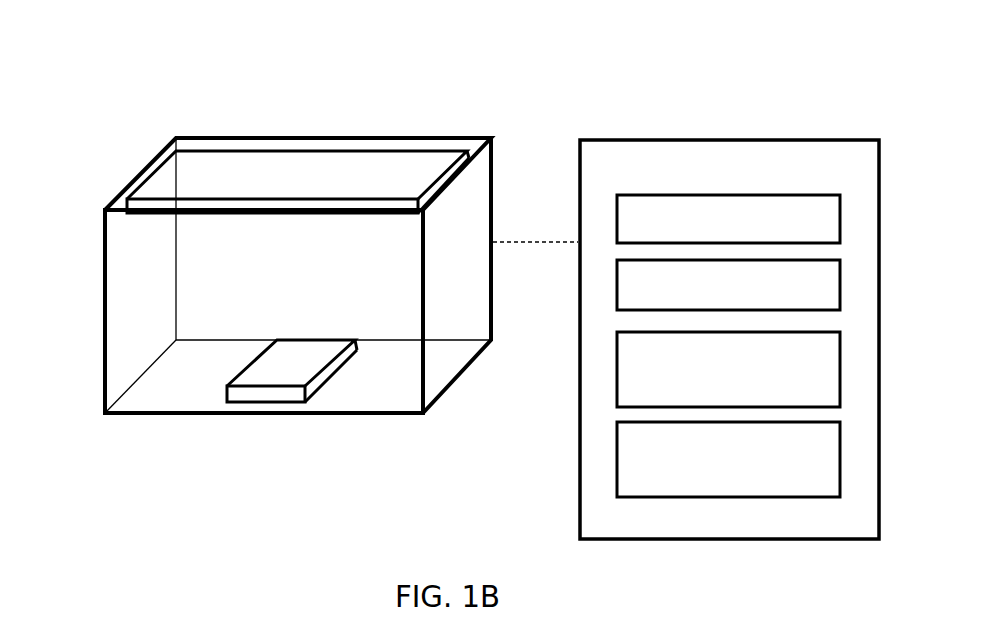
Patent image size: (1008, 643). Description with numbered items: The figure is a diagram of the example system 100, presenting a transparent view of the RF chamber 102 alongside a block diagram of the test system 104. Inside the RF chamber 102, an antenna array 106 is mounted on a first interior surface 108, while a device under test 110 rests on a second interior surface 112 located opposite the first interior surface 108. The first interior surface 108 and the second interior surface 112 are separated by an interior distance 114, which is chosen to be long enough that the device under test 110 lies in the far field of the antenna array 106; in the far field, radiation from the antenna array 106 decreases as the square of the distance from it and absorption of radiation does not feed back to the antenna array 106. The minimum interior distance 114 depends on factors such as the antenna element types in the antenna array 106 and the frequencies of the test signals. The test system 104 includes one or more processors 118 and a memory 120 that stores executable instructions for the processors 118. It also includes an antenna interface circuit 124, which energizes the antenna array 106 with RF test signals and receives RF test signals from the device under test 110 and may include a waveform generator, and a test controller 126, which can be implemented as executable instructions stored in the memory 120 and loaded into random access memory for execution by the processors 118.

The system 100 is at (480, 58).
The RF chamber 102 is at (203, 97).
The test system 104 is at (735, 138).
The antenna array 106 is at (298, 182).
The first interior surface 108 is at (313, 138).
The device under test 110 is at (292, 371).
The second interior surface 112 is at (345, 414).
The interior distance 114 is at (66, 213).
The processors 118 is at (728, 219).
The memory 120 is at (728, 285).
The antenna interface circuit 124 is at (728, 369).
The test controller 126 is at (728, 459).